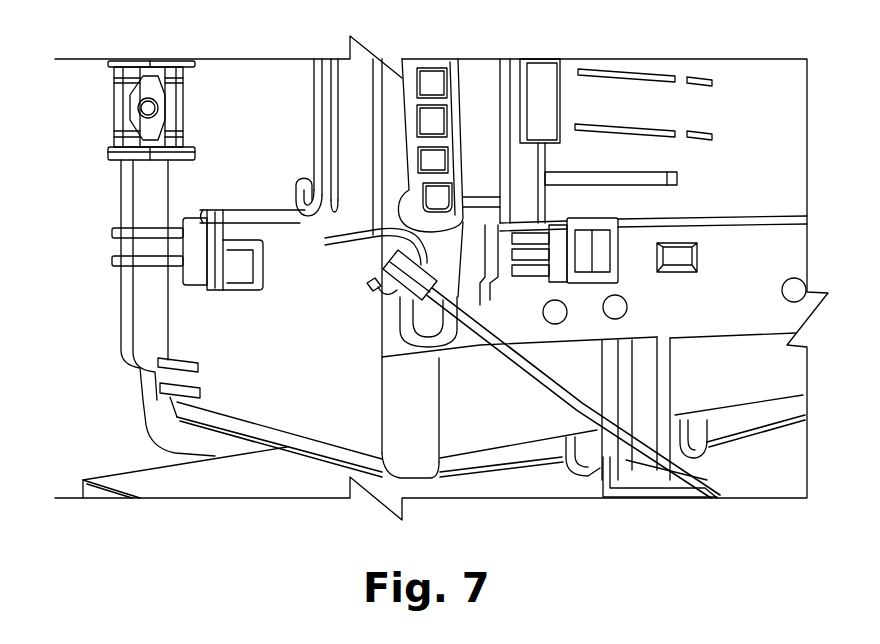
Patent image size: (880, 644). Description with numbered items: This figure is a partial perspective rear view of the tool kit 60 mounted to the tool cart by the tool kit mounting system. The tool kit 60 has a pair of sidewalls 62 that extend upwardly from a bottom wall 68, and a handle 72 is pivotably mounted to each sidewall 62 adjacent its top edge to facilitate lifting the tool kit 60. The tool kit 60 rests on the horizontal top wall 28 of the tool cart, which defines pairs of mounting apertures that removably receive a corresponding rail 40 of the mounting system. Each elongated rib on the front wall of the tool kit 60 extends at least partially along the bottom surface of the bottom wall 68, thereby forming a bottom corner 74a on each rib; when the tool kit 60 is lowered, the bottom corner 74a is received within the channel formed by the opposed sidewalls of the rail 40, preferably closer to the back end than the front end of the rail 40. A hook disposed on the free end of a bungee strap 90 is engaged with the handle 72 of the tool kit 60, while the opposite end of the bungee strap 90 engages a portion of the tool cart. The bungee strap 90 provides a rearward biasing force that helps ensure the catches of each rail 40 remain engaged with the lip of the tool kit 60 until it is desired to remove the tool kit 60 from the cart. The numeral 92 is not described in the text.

The tool kit 60 is at (98, 197).
The strap 92 is at (303, 193).
The bottom wall 68 is at (745, 153).
The handle 72 is at (290, 255).
The top wall 28 is at (147, 485).
The sidewall 62 is at (340, 415).
The bungee strap 90 is at (543, 372).
The rail 40 is at (587, 482).
The bottom corner 74a is at (632, 488).